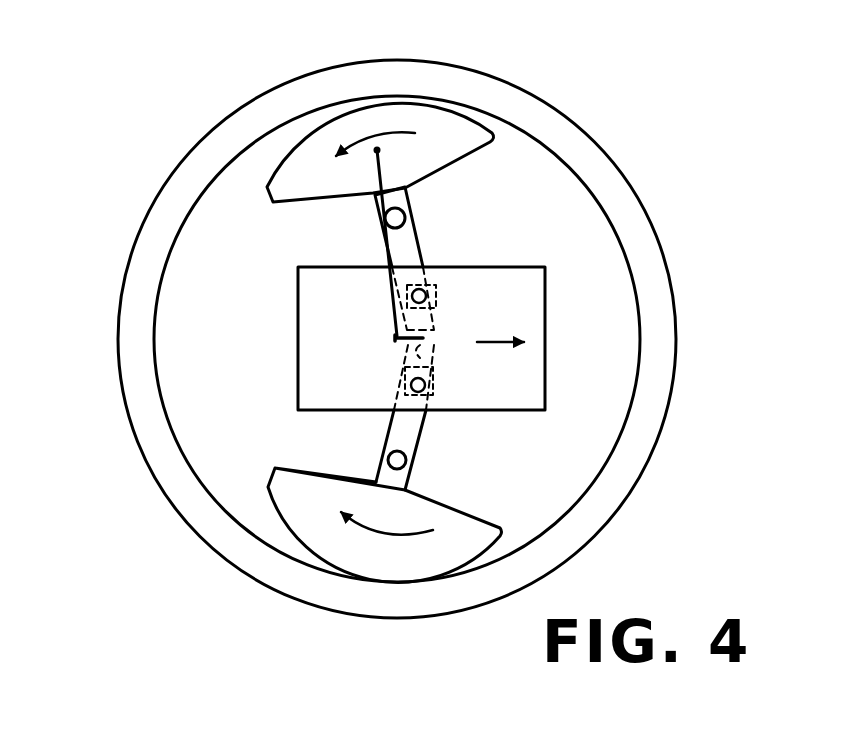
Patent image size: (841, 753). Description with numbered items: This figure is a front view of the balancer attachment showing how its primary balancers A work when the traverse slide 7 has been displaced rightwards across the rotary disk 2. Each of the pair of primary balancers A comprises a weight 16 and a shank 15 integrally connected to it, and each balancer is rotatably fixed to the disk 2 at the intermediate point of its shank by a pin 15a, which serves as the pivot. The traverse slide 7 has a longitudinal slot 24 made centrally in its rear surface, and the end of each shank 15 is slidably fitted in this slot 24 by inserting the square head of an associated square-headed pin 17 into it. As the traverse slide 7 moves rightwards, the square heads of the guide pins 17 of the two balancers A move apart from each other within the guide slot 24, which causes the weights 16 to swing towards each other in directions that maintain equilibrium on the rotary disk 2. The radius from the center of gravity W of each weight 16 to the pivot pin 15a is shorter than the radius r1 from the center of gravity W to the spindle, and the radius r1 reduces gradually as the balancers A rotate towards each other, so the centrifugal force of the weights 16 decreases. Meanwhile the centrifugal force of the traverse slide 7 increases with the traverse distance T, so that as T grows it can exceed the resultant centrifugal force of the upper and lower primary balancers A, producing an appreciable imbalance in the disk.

The rotary disk 2 is at (432, 339).
The traverse slide 7 is at (301, 338).
The shank 15 is at (534, 319).
The pin 15a is at (522, 180).
The weight 16 is at (375, 118).
The square-headed pin 17 is at (564, 259).
The longitudinal slot 24 is at (569, 390).
The center of gravity W is at (409, 169).
The traverse distance T is at (253, 409).
The primary balancer A is at (94, 206).
The radius r1 is at (225, 341).